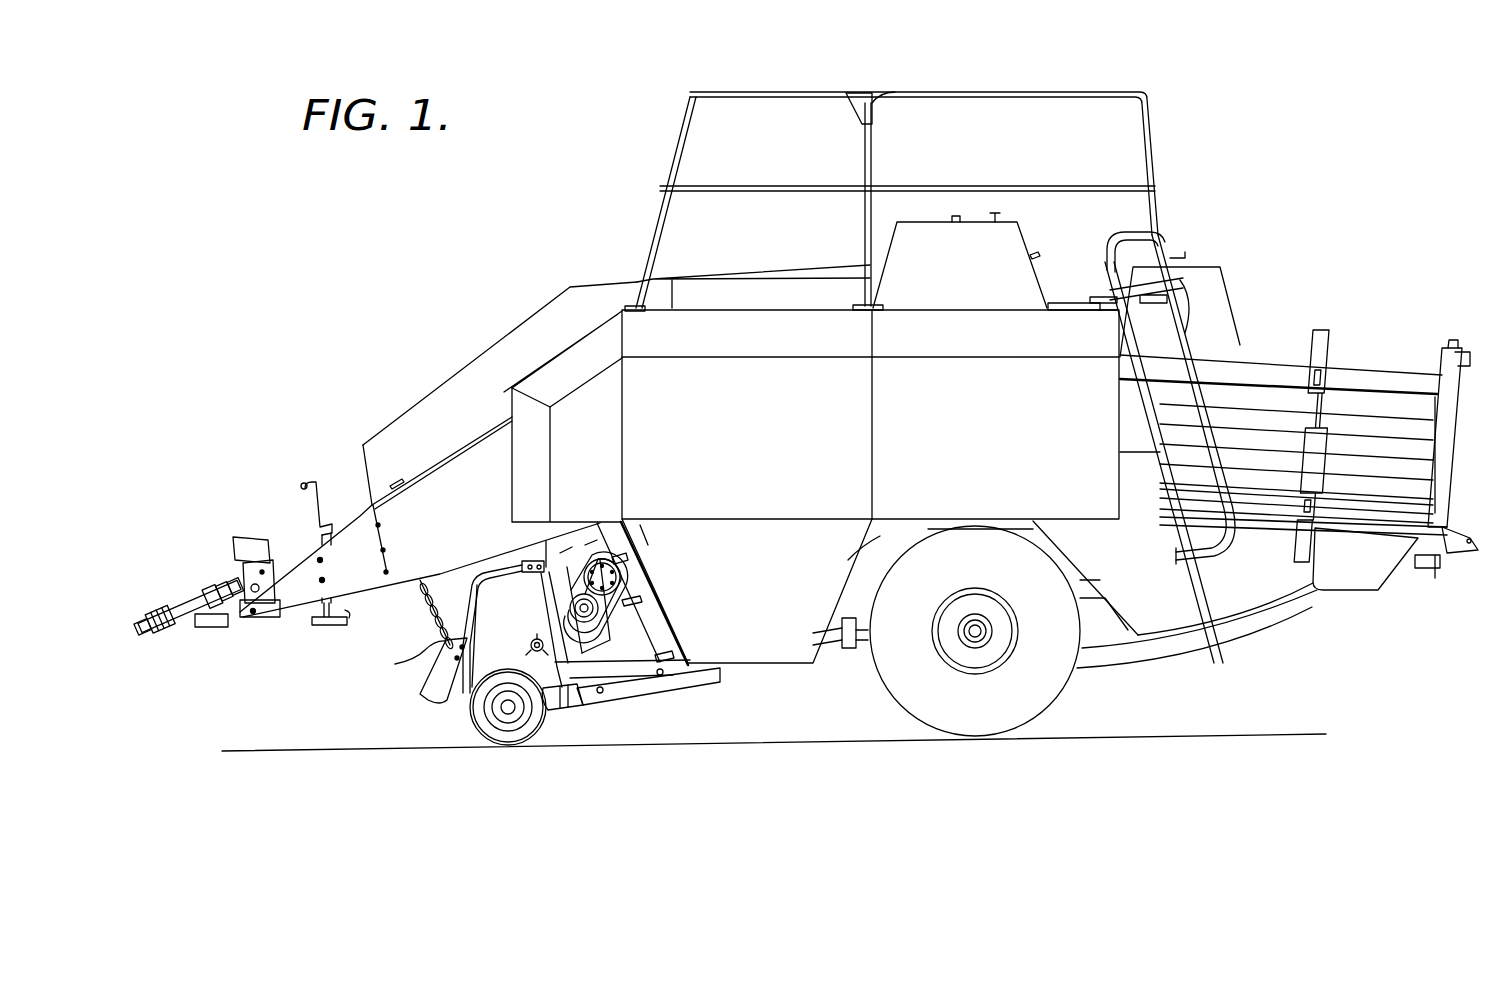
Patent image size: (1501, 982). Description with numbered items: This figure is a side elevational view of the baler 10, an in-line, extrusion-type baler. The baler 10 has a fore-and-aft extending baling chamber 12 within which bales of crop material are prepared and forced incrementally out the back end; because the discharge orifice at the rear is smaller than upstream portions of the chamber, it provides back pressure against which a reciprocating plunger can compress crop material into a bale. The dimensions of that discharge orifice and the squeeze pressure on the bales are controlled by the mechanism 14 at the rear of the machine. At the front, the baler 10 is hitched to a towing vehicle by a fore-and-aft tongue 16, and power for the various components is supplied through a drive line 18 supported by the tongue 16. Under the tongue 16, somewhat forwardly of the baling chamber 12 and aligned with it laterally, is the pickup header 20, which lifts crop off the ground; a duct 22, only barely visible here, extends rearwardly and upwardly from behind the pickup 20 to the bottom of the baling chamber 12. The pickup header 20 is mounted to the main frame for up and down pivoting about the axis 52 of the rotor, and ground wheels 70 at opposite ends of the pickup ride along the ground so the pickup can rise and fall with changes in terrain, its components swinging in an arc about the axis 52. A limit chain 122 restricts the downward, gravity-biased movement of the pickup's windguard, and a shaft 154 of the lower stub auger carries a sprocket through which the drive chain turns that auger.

The baler 10 is at (1204, 140).
The baling chamber 12 is at (1262, 390).
The mechanism 14 is at (1343, 374).
The tongue 16 is at (312, 568).
The drive line 18 is at (190, 606).
The pickup header 20 is at (541, 644).
The duct 22 is at (857, 586).
The axis 52 is at (577, 608).
The ground wheels 70 is at (534, 733).
The limit chain 122 is at (424, 660).
The shaft 154 is at (531, 645).